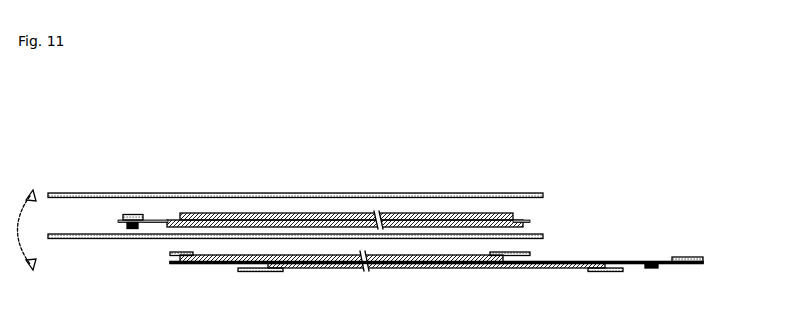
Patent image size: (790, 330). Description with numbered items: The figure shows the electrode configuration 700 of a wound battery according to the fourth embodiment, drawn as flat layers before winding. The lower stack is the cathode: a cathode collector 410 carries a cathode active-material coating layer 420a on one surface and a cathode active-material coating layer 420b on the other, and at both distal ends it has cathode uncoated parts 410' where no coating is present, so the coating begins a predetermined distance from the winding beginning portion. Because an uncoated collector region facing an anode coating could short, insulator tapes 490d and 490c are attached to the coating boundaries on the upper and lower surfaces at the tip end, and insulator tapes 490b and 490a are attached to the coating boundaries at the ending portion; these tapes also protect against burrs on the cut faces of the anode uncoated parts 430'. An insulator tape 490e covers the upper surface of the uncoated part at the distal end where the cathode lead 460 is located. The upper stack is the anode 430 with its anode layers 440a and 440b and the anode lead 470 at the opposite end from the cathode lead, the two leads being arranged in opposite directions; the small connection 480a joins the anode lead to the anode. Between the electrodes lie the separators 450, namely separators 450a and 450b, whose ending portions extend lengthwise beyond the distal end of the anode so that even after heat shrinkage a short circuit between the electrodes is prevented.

The display device 700 is at (573, 118).
The cathode collector 410 is at (440, 295).
The cathode uncoated part 410' is at (431, 259).
The cathode active-material coating layer 420a is at (330, 270).
The cathode active-material coating layer 420b is at (432, 270).
The display panel 430 is at (346, 187).
The anode uncoated part 430' is at (328, 182).
The first adhesive layer 440a is at (440, 213).
The second adhesive layer 440b is at (340, 213).
The separators 450 is at (610, 182).
The separator 450a is at (545, 236).
The separator 450b is at (545, 195).
The cathode lead 460 is at (652, 269).
The anode lead 470 is at (120, 228).
The connector 480a is at (123, 217).
The insulator tape 490a is at (606, 273).
The insulator tape 490b is at (523, 257).
The insulator tape 490c is at (262, 274).
The insulator tape 490d is at (170, 254).
The insulator tape 490e is at (705, 257).